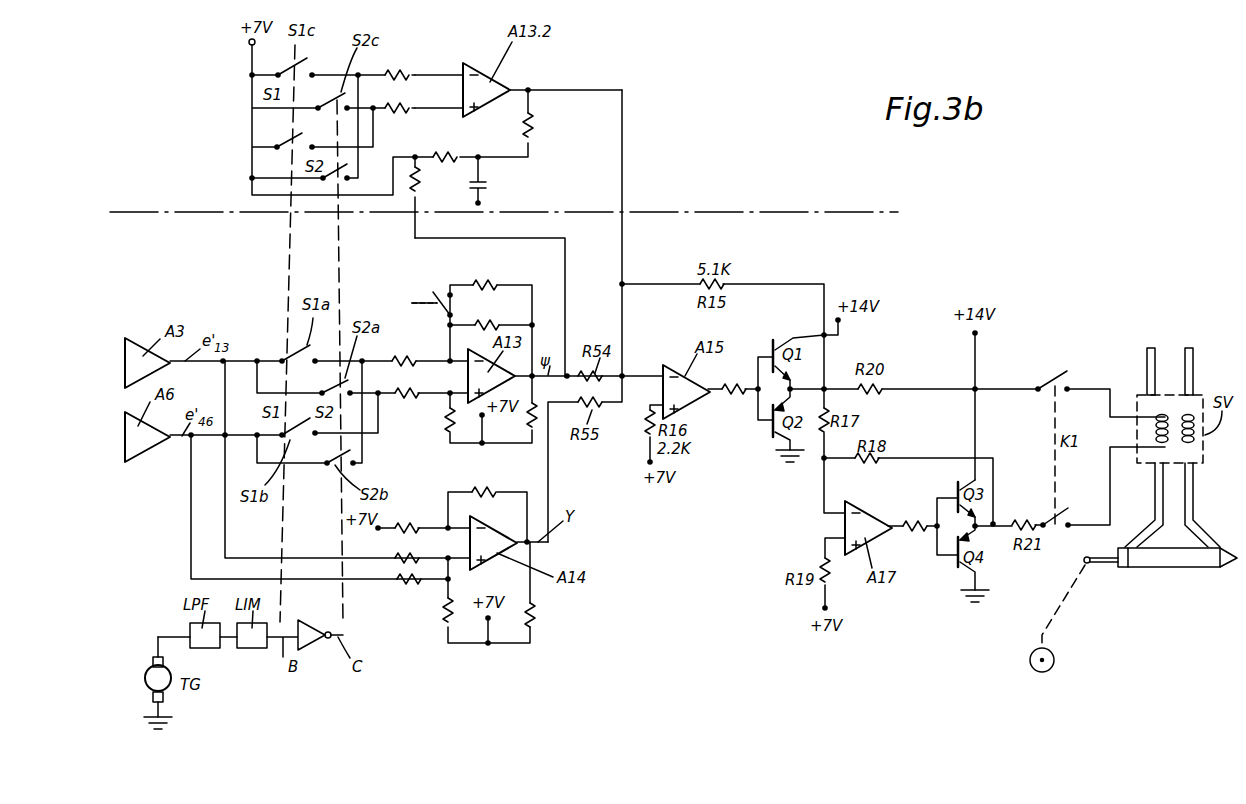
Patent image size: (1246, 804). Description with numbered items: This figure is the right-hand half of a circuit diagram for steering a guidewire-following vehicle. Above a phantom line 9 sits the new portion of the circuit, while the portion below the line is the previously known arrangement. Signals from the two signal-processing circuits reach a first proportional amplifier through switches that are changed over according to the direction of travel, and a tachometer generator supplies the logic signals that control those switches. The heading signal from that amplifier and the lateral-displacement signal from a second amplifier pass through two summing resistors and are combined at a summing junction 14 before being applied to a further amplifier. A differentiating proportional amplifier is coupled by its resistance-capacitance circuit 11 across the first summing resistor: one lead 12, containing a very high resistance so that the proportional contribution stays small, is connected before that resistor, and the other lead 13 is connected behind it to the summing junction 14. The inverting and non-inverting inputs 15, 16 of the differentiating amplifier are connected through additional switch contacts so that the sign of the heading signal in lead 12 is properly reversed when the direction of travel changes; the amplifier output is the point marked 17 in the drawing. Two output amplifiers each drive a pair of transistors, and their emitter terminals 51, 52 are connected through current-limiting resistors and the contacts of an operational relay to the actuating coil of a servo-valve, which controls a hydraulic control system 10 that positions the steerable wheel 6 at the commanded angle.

The steerable wheel 6 is at (1055, 660).
The phantom line 9 is at (797, 210).
The hydraulic control system 10 is at (1165, 562).
The resistance-capacitance circuit 11 is at (490, 166).
The lead 12 is at (567, 265).
The lead 13 is at (627, 260).
The summing junction 14 is at (628, 374).
The inverting input 15 is at (465, 112).
The non-inverting input 16 is at (463, 67).
The output of amplifier A13.2 17 is at (515, 89).
The emitter terminal 51 is at (789, 398).
The emitter terminal 52 is at (973, 541).